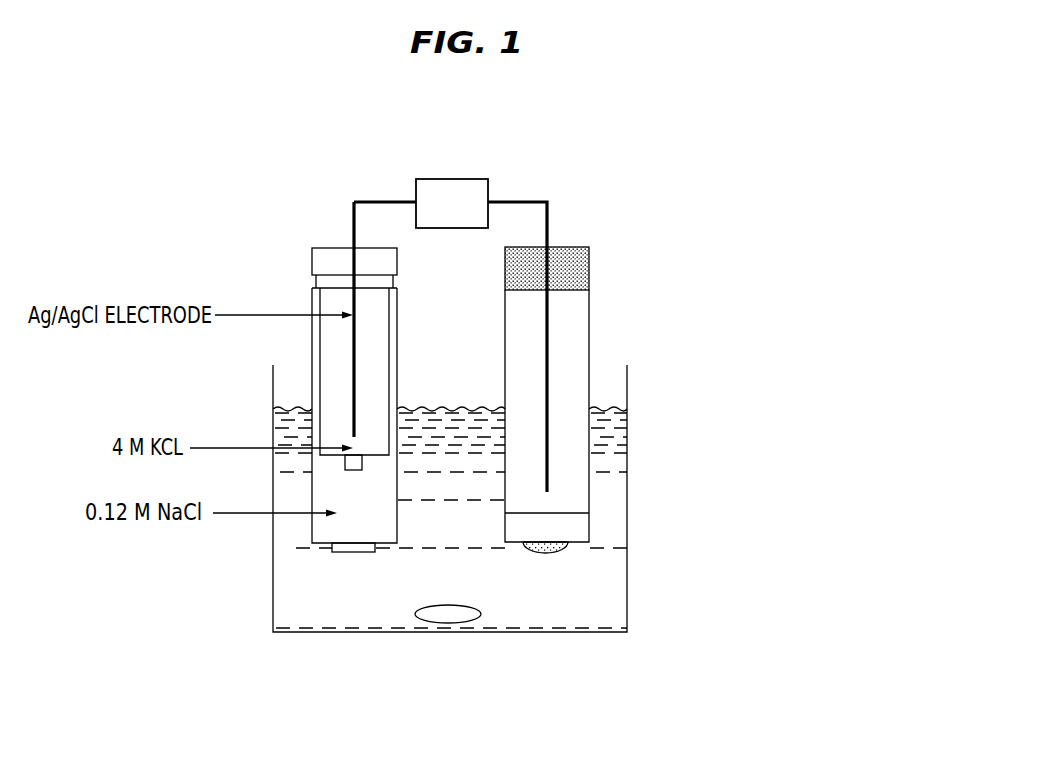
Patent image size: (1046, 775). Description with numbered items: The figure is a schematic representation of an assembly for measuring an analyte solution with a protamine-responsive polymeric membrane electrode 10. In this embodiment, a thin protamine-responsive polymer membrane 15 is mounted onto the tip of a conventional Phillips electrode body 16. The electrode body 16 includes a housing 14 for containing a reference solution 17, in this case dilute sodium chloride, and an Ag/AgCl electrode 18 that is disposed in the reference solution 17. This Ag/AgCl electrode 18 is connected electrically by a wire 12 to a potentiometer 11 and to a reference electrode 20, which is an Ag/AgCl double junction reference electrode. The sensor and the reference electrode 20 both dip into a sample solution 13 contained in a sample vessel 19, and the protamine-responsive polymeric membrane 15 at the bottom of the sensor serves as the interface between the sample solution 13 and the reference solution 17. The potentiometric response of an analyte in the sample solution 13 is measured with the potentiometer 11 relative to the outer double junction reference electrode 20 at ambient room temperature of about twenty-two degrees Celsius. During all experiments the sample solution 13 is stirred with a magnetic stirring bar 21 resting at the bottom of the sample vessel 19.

The protamine-responsive polymeric membrane electrode 10 is at (709, 424).
The potentiometer 11 is at (448, 179).
The wire 12 is at (525, 202).
The sample solution 13 is at (298, 586).
The housing 14 is at (588, 374).
The protamine-responsive polymer membrane 15 is at (660, 644).
The Phillips ISW-561 electrode body 16 is at (611, 268).
The reference solution 17 is at (579, 495).
The Ag/AgCl electrode 18 is at (562, 448).
The sample vessel 19 is at (273, 426).
The Ag/AgCl double junction reference electrode 20 is at (291, 250).
The magnetic stirring bar 21 is at (438, 630).